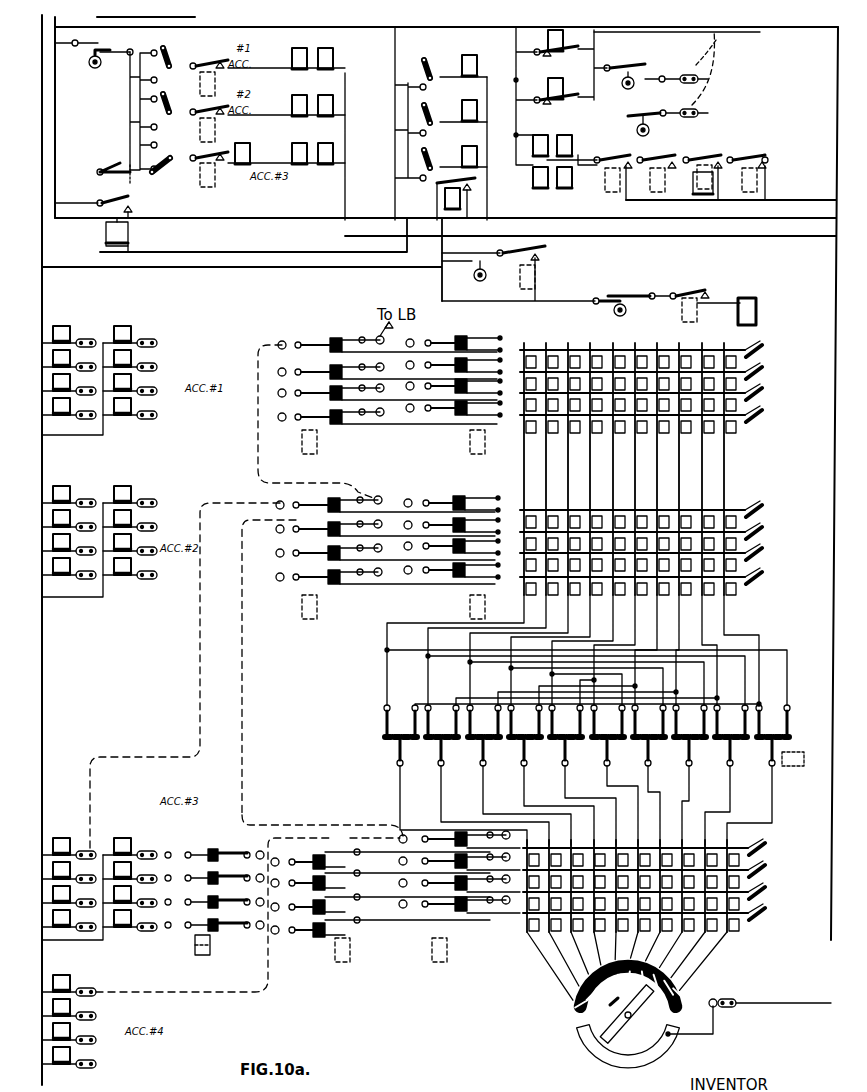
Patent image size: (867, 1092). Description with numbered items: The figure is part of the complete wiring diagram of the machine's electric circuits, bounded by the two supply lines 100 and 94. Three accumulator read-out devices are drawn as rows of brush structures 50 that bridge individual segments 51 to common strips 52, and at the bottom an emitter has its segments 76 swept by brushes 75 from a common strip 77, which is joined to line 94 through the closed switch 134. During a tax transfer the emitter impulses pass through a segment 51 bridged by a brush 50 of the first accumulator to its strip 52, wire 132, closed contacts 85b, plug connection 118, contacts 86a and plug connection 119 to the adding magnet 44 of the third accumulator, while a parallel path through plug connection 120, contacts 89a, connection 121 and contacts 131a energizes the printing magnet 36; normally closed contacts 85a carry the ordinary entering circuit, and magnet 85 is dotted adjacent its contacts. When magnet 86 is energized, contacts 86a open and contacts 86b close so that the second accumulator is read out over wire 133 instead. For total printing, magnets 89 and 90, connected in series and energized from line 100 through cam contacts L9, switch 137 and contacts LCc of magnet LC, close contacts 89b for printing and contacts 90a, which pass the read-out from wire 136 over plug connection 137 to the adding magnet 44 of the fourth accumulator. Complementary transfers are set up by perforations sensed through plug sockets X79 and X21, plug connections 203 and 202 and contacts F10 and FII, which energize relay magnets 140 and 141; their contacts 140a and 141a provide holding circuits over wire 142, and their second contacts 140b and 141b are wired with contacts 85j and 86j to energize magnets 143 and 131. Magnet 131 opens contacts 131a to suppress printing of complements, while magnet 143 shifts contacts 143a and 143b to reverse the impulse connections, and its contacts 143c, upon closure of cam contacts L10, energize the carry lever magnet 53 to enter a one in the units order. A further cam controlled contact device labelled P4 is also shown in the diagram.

The line 100 is at (42, 78).
The line 94 is at (838, 92).
The cam contacts L9 is at (94, 48).
The contacts LCc is at (210, 150).
The magnet LC is at (200, 182).
The magnet 90 is at (248, 166).
The magnet 89 is at (302, 166).
The plug connection 137 is at (203, 1008).
The relay magnet 140 is at (590, 50).
The contacts 140a is at (546, 52).
The relay magnet 141 is at (796, 180).
The contacts 141a is at (546, 100).
The contacts F10 is at (642, 71).
The plug socket X79 is at (710, 77).
The contacts FII is at (654, 103).
The plug socket X21 is at (710, 111).
The plug connection 202 is at (712, 95).
The plug connection 203 is at (702, 56).
The wire 142 is at (775, 28).
The contacts 86j is at (657, 126).
The relay magnet 143 is at (640, 157).
The contacts 85j is at (690, 152).
The contacts 140b is at (732, 152).
The contacts 141b is at (768, 162).
The relay magnet 131 is at (397, 552).
The magnet 86 is at (298, 608).
The magnet 85 is at (298, 444).
The pilot lamp P4 is at (493, 263).
The cam contacts L10 is at (644, 297).
The contacts 143c is at (708, 290).
The carry lever magnet 53 is at (757, 305).
The adding magnet 44 is at (70, 343).
The printing magnet 36 is at (128, 343).
The contacts 85a is at (305, 337).
The contacts 85b is at (312, 352).
The wire 132 is at (476, 348).
The plug connection 118 is at (256, 402).
The contacts 86a is at (310, 497).
The contacts 86b is at (310, 517).
The wire 133 is at (475, 512).
The plug connection 119 is at (198, 663).
The plug connection 120 is at (244, 667).
The plug connection 121 is at (326, 820).
The wire 136 is at (388, 832).
The brush structures 50 is at (760, 354).
The segments 51 is at (745, 348).
The common strips 52 is at (542, 343).
The contacts 143a is at (386, 742).
The contacts 143b is at (406, 752).
The contacts 131a is at (210, 855).
The contacts 90a is at (328, 860).
The contacts 89a is at (465, 834).
The contacts 89b is at (480, 834).
The segments 76 is at (676, 996).
The brushes 75 is at (616, 1042).
The common strip 77 is at (662, 1045).
The switch 134 is at (736, 1002).